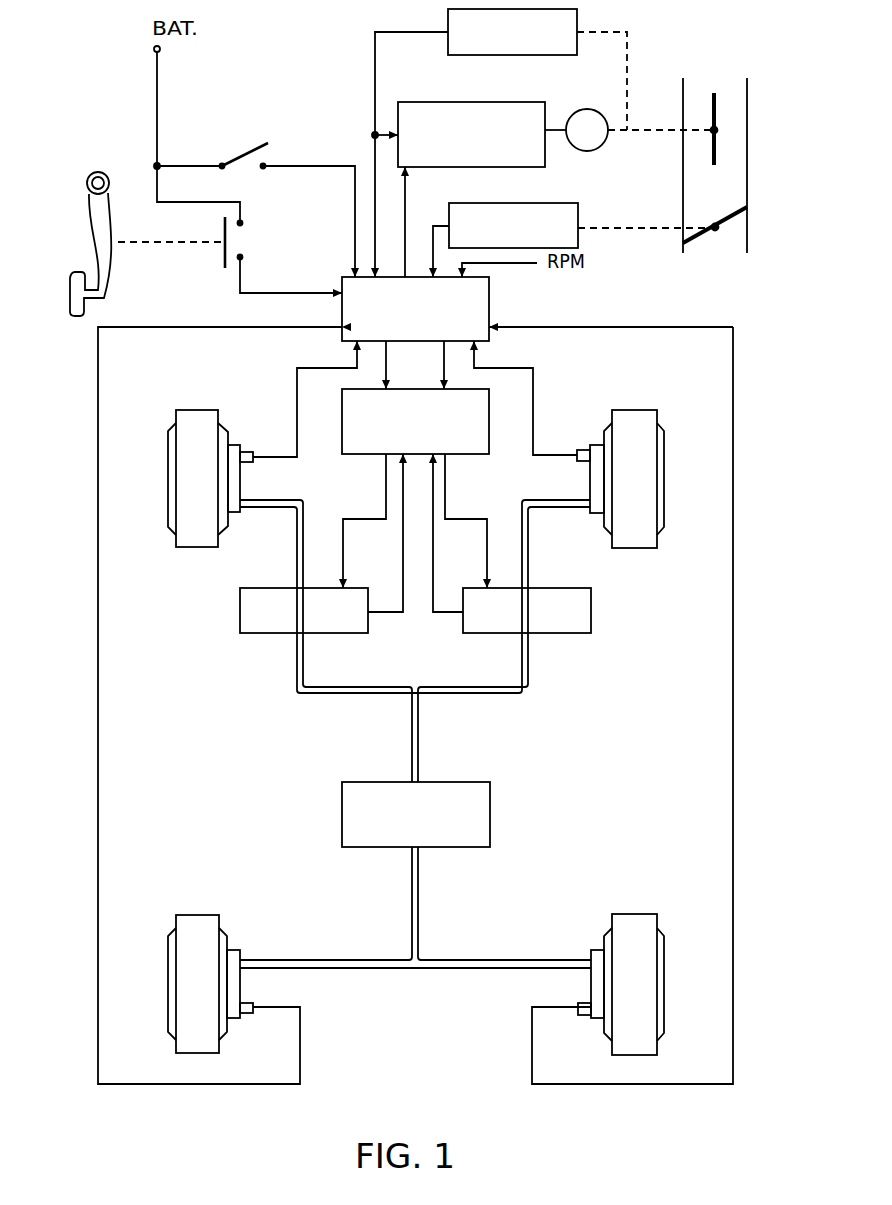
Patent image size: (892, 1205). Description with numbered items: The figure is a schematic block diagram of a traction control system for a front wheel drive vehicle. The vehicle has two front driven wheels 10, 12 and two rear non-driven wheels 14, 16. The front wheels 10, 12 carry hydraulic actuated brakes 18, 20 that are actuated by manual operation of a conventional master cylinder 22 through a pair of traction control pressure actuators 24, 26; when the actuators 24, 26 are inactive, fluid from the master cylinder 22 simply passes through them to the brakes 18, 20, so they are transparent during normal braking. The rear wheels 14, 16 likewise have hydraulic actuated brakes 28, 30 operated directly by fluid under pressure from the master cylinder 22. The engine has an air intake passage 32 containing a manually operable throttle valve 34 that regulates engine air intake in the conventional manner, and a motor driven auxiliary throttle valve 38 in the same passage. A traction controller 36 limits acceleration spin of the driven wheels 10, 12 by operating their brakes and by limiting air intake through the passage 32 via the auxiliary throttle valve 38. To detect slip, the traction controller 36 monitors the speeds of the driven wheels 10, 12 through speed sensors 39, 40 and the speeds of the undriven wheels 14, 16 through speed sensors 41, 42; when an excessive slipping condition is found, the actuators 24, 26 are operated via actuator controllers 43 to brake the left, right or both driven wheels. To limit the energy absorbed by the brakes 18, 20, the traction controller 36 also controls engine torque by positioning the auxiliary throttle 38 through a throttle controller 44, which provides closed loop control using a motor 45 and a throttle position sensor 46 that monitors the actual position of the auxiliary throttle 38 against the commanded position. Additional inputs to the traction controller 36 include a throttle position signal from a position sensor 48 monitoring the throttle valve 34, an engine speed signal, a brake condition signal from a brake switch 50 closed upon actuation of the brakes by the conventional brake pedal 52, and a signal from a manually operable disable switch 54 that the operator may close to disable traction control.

The front driven wheel 10 is at (196, 410).
The front driven wheel 12 is at (624, 415).
The rear non-driven wheel 14 is at (215, 924).
The rear non-driven wheel 16 is at (633, 935).
The hydraulic actuated brake 18 is at (241, 491).
The hydraulic actuated brake 20 is at (597, 486).
The master cylinder 22 is at (453, 792).
The traction control pressure actuator 24 is at (240, 628).
The traction control pressure actuator 26 is at (483, 622).
The hydraulic actuated brake 28 is at (233, 990).
The hydraulic actuated brake 30 is at (597, 982).
The air intake passage 32 is at (747, 190).
The throttle valve 34 is at (692, 248).
The traction controller 36 is at (488, 304).
The auxiliary throttle valve 38 is at (716, 92).
The speed sensor 39 is at (247, 452).
The speed sensor 40 is at (580, 450).
The speed sensor 41 is at (245, 1013).
The speed sensor 42 is at (582, 1016).
The actuator controllers 43 is at (347, 420).
The throttle controller 44 is at (500, 106).
The motor 45 is at (592, 150).
The throttle position sensor 46 is at (448, 27).
The position sensor 48 is at (560, 220).
The brake switch 50 is at (221, 236).
The brake pedal 52 is at (104, 268).
The disable switch 54 is at (247, 145).